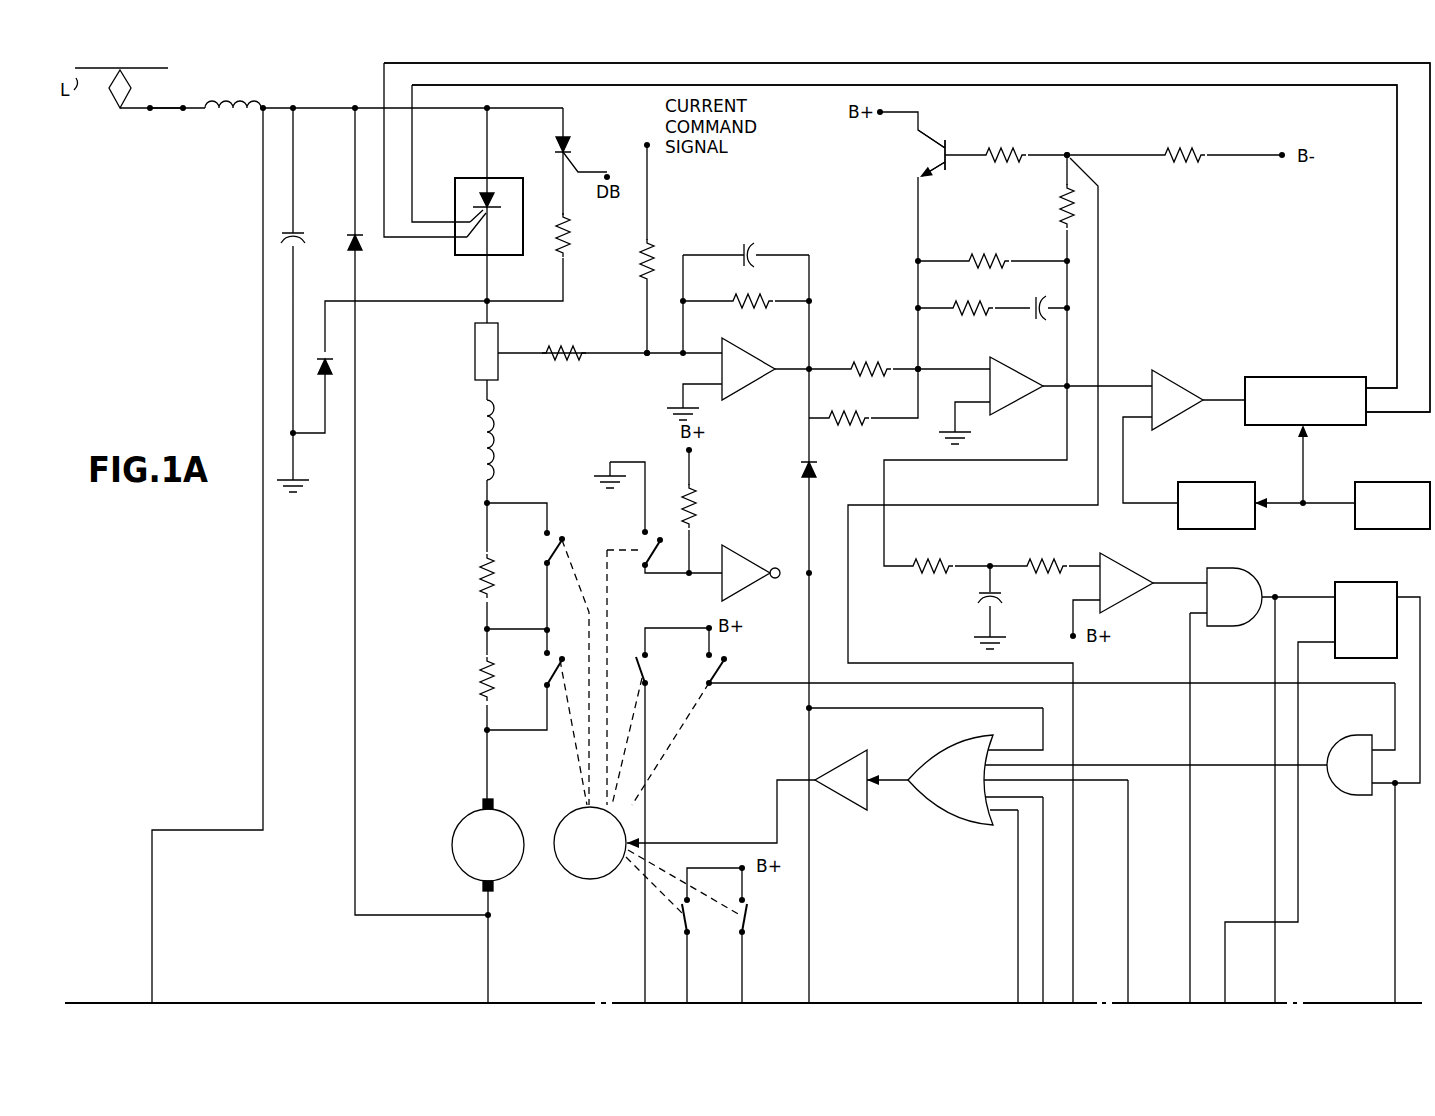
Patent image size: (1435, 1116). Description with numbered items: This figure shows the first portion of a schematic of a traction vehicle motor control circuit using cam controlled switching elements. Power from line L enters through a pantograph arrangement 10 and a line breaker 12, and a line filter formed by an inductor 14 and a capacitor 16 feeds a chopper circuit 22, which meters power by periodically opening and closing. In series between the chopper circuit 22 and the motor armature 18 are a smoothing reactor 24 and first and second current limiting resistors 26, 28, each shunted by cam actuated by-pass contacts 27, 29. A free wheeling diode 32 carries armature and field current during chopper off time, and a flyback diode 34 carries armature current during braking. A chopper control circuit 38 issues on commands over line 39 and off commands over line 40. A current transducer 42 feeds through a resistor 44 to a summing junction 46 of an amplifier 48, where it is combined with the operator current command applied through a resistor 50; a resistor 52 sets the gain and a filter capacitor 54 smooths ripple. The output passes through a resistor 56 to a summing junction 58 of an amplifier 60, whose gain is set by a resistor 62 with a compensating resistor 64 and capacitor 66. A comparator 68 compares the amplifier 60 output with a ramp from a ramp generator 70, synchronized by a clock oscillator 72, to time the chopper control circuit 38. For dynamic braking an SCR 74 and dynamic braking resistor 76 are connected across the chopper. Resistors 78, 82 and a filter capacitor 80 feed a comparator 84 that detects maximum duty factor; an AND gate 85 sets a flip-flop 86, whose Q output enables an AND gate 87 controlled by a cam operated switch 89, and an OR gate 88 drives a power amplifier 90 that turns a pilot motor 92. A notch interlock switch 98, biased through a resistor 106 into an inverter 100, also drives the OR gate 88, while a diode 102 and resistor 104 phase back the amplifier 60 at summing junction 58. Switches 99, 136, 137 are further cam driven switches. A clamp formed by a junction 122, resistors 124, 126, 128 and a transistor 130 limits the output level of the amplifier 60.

The pantograph arrangement 10 is at (110, 102).
The line breaker 12 is at (166, 110).
The inductor 14 is at (233, 96).
The capacitor 16 is at (308, 228).
The armature 18 is at (462, 819).
The chopper circuit 22 is at (458, 178).
The smoothing reactor 24 is at (484, 442).
The first current limiting resistor 26 is at (474, 580).
The resistor by-pass contacts 27 is at (548, 542).
The second current limiting resistor 28 is at (472, 685).
The resistor by-pass contacts 29 is at (550, 676).
The free wheeling diode 32 is at (324, 356).
The flyback diode 34 is at (350, 239).
The chopper control circuit 38 is at (1300, 376).
The line 39 is at (1356, 84).
The line 40 is at (1298, 84).
The current transducer 42 is at (475, 348).
The resistor 44 is at (569, 350).
The summing junction 46 is at (644, 350).
The amplifier 48 is at (756, 364).
The resistor 50 is at (654, 247).
The resistor 52 is at (768, 292).
The filter capacitor 54 is at (764, 247).
The resistor 56 is at (862, 364).
The summing junction 58 is at (912, 374).
The amplifier 60 is at (1028, 374).
The resistor 62 is at (978, 253).
The resistor 64 is at (990, 300).
The capacitor 66 is at (1038, 310).
The comparator 68 is at (1188, 388).
The ramp generator 70 is at (1222, 481).
The clock oscillator 72 is at (1385, 481).
The SCR 74 is at (586, 151).
The dynamic braking resistor 76 is at (568, 234).
The first resistor 78 is at (938, 559).
The filter capacitor 80 is at (974, 600).
The second resistor 82 is at (1048, 559).
The comparator 84 is at (1136, 568).
The AND gate 85 is at (1260, 576).
The edge-triggered R-S flip-flop 86 is at (1366, 578).
The AND gate 87 is at (1356, 730).
The OR gate 88 is at (920, 754).
The cam operated switch 89 is at (718, 666).
The power amplifier 90 is at (842, 762).
The pilot motor 92 is at (603, 880).
The notch interlock switch 98 is at (642, 544).
The switch 99 is at (690, 922).
The inverter 100 is at (752, 563).
The diode 102 is at (798, 460).
The resistor 104 is at (842, 422).
The resistor 106 is at (698, 500).
The junction 122 is at (1070, 152).
The resistor 124 is at (1186, 148).
The resistor 126 is at (1062, 200).
The resistor 128 is at (1008, 150).
The transistor 130 is at (930, 154).
The cam controlled switch 136 is at (646, 678).
The cam actuated switch 137 is at (740, 922).